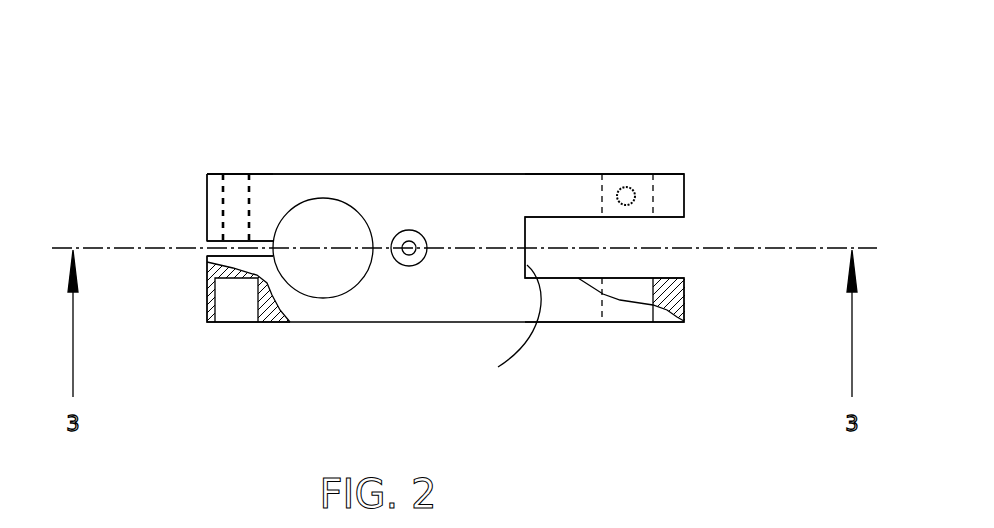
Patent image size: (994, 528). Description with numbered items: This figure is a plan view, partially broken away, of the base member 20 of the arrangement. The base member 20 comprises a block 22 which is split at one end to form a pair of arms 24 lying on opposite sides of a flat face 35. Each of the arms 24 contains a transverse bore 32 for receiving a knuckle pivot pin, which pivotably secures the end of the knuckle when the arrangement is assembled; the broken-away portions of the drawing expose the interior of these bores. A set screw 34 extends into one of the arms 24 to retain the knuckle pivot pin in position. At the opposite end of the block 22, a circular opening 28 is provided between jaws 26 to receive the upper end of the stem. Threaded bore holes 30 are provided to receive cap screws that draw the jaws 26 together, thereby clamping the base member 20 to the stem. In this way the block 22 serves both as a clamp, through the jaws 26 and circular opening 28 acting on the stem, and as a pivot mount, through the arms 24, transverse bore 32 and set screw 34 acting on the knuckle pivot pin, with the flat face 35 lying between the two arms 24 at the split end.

The base member 20 is at (437, 165).
The block 22 is at (400, 174).
The arms 24 is at (787, 335).
The jaws 26 is at (207, 293).
The circular opening 28 is at (323, 207).
The threaded bore holes 30 is at (235, 308).
The transverse bore 32 is at (623, 290).
The set screw 34 is at (621, 189).
The flat face 35 is at (499, 322).